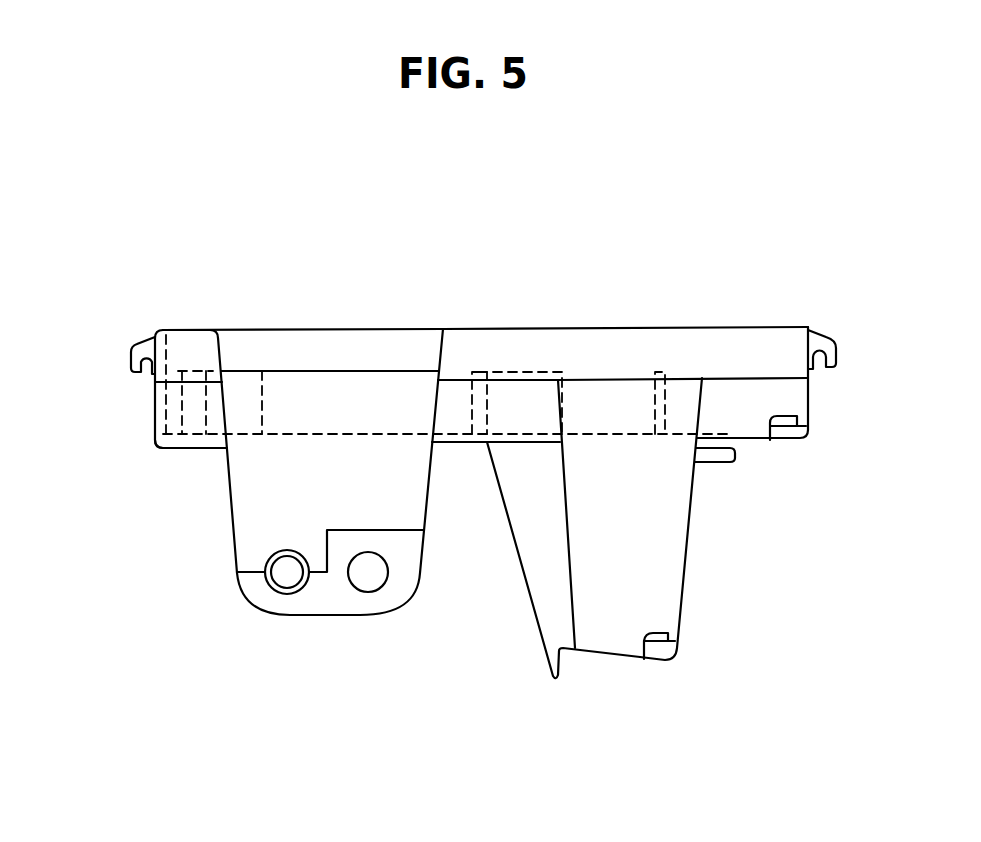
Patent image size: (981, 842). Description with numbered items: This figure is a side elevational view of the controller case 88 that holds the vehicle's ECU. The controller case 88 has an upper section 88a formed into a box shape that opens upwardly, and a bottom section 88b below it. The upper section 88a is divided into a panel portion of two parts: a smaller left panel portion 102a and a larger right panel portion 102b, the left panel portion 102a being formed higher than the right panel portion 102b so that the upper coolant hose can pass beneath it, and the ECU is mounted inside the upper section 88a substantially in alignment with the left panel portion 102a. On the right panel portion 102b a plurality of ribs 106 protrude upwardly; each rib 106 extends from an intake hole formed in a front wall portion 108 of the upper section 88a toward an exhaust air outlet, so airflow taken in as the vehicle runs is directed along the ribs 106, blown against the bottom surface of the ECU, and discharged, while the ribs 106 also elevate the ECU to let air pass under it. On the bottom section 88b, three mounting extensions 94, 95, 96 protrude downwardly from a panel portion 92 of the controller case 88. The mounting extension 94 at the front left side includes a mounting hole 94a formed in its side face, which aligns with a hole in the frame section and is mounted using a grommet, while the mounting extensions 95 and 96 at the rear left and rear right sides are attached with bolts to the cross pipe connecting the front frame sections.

The controller case 88 is at (735, 307).
The upper section 88a is at (148, 400).
The bottom section 88b is at (223, 519).
The panel portion 92 is at (757, 440).
The mounting extension 94 is at (260, 542).
The mounting hole 94a is at (369, 578).
The mounting extension 95 is at (660, 585).
The mounting extension 96 is at (537, 577).
The left panel portion 102a is at (523, 372).
The right panel portion 102b is at (730, 434).
The ribs 106 is at (443, 325).
The front wall portion 108 is at (153, 430).